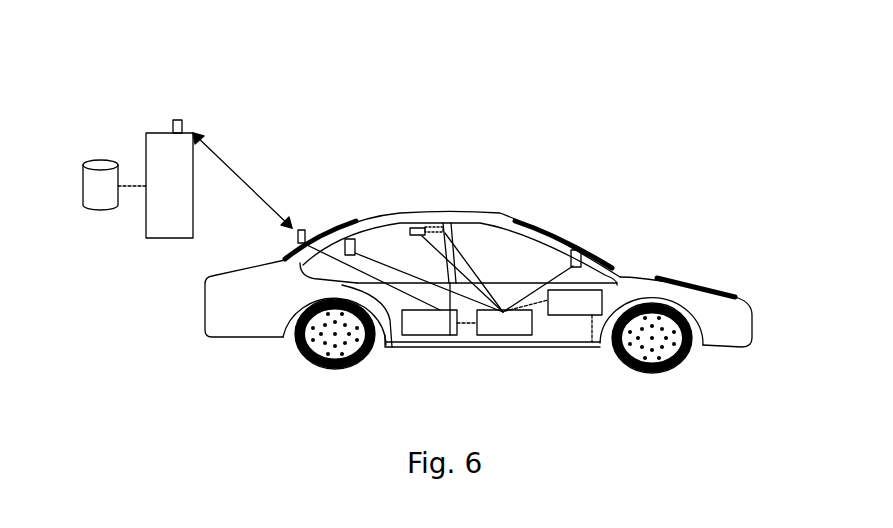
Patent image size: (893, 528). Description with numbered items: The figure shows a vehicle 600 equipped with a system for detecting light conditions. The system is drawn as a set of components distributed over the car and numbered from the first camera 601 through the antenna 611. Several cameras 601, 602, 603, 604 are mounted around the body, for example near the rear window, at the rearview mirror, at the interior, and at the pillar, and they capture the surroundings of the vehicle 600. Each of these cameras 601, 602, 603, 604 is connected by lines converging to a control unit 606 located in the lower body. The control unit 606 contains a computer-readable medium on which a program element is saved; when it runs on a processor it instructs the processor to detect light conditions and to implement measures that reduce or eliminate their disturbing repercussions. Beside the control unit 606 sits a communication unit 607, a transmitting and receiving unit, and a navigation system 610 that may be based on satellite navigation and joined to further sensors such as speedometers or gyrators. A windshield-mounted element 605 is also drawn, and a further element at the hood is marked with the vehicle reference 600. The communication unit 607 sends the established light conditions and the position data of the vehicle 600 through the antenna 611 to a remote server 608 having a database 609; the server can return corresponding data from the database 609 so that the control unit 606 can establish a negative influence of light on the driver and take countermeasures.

The vehicle 600 is at (628, 271).
The camera 601 is at (347, 228).
The camera 602 is at (417, 230).
The camera 603 is at (418, 230).
The camera 604 is at (440, 230).
The windshield sensor 605 is at (577, 250).
The control unit 606 is at (500, 335).
The communication unit 607 is at (422, 335).
The remote server 608 is at (160, 133).
The database 609 is at (100, 160).
The navigation system 610 is at (583, 315).
The antenna 611 is at (298, 237).